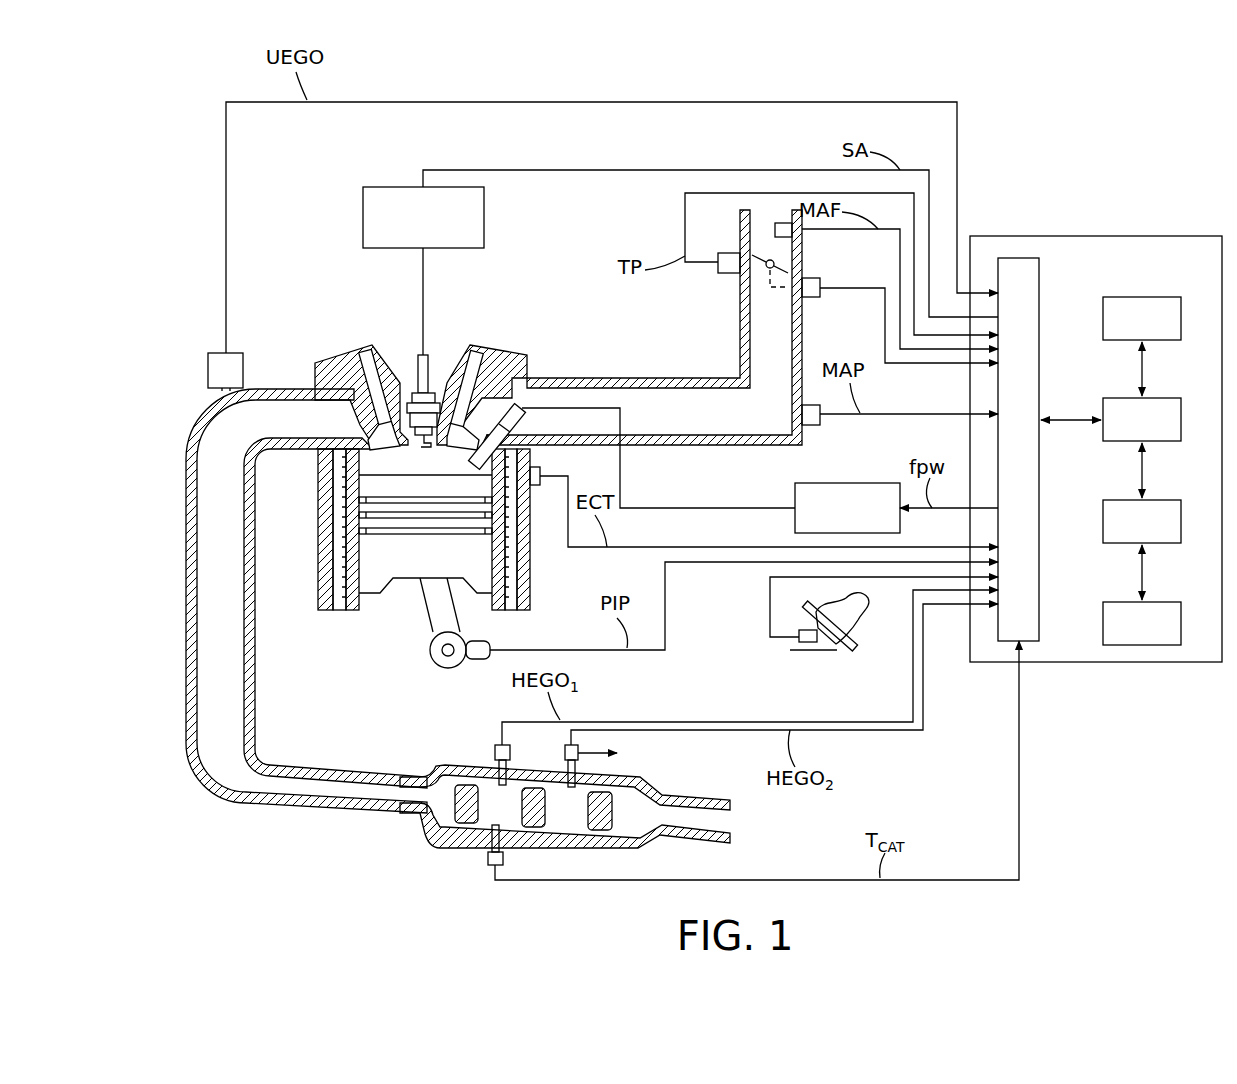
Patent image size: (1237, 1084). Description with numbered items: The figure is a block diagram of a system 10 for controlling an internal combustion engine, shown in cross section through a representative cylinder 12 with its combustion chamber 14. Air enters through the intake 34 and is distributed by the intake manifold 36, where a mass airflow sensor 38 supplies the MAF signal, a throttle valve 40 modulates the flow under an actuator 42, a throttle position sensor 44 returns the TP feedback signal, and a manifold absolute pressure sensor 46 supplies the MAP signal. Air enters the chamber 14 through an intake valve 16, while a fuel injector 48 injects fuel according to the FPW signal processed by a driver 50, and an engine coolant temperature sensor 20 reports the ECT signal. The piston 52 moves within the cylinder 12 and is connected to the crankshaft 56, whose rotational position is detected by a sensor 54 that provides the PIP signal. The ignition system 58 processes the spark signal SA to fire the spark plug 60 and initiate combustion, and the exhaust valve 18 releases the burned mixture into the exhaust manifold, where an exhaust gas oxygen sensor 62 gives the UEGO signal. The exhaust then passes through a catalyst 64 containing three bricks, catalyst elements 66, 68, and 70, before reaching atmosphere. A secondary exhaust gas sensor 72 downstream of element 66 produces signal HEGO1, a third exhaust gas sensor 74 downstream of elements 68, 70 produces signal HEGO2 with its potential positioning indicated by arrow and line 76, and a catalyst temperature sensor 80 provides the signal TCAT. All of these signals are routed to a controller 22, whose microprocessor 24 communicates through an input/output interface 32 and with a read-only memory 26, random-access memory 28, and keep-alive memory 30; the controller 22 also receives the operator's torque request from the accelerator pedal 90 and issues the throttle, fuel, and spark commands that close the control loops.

The system 10 is at (350, 318).
The cylinder 12 is at (345, 611).
The combustion chamber 14 is at (383, 476).
The intake valve 16 is at (478, 345).
The exhaust valve 18 is at (378, 432).
The engine coolant temperature sensor 20 is at (545, 470).
The controller 22 is at (1118, 236).
The microprocessor 24 is at (1172, 398).
The read-only memory (ROM) 26 is at (1160, 297).
The random-access memory (RAM) 28 is at (1172, 500).
The keep-alive memory (KAM) 30 is at (1172, 602).
The input/output (I/O) interface 32 is at (1042, 283).
The intake 34 is at (748, 350).
The intake manifold 36 is at (688, 395).
The mass airflow sensor 38 is at (784, 223).
The throttle valve 40 is at (752, 270).
The actuator 42 is at (822, 283).
The throttle position sensor 44 is at (727, 253).
The manifold absolute pressure sensor 46 is at (808, 405).
The fuel injector 48 is at (548, 385).
The driver 50 is at (840, 483).
The piston 52 is at (388, 572).
The sensor 54 is at (482, 662).
The crankshaft 56 is at (450, 668).
The ignition system 58 is at (484, 215).
The spark plug 60 is at (428, 355).
The exhaust gas oxygen sensor 62 is at (214, 352).
The catalyst 64 is at (432, 765).
The catalyst element 66 is at (466, 822).
The catalyst element 68 is at (532, 828).
The catalyst element 70 is at (598, 832).
The secondary exhaust gas sensor 72 is at (512, 752).
The third exhaust gas sensor 74 is at (580, 750).
The arrow and line 76 is at (606, 745).
The catalyst temperature sensor 80 is at (490, 866).
The accelerator pedal 90 is at (840, 648).